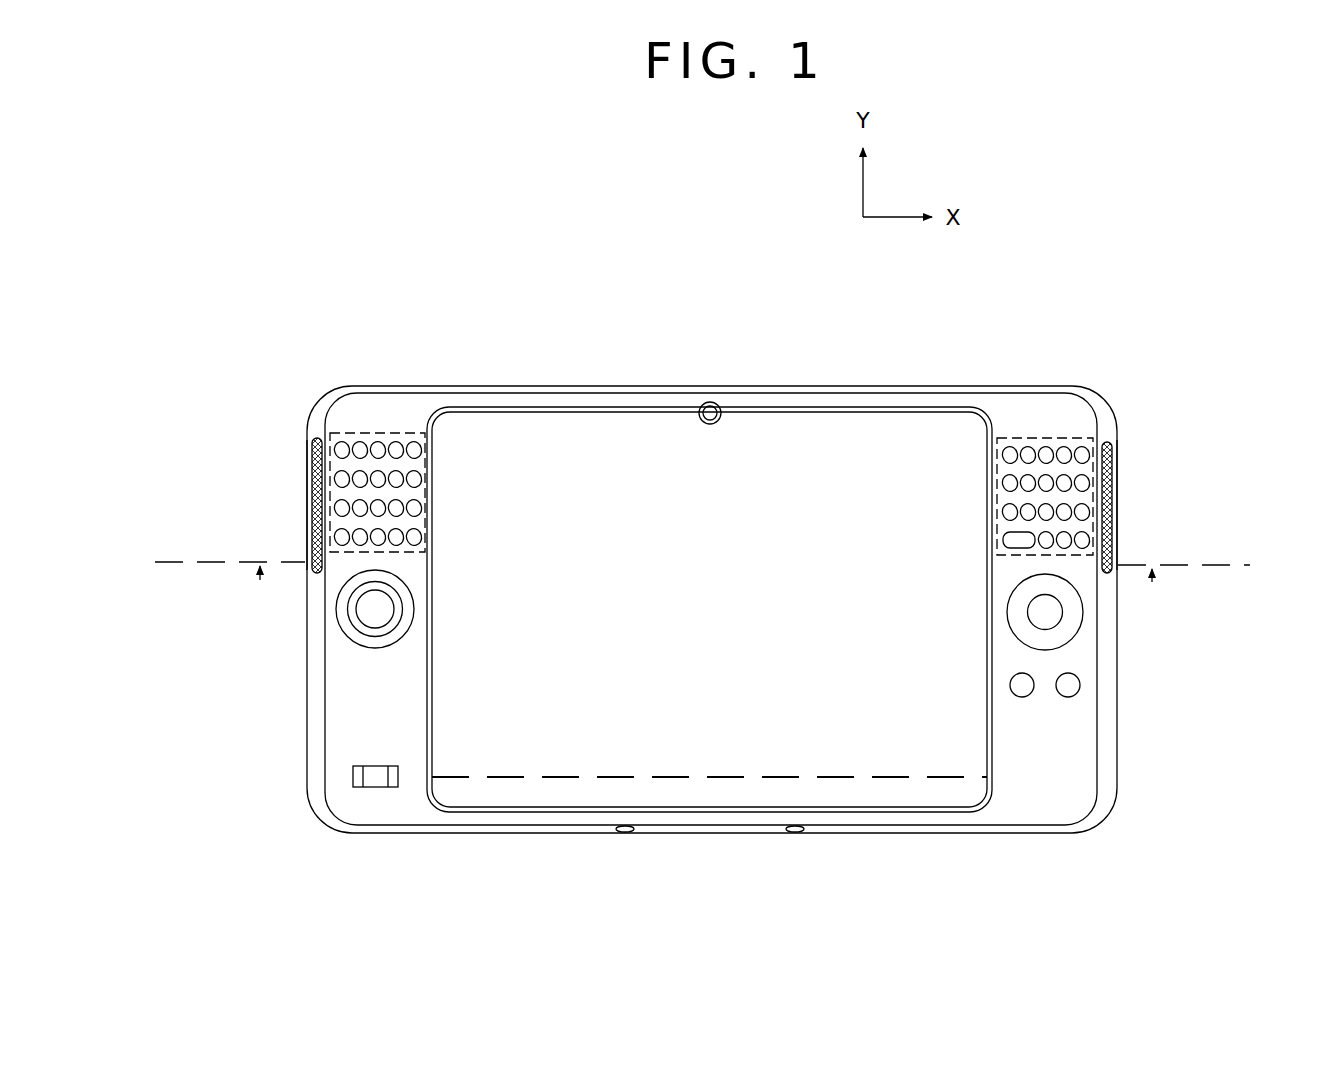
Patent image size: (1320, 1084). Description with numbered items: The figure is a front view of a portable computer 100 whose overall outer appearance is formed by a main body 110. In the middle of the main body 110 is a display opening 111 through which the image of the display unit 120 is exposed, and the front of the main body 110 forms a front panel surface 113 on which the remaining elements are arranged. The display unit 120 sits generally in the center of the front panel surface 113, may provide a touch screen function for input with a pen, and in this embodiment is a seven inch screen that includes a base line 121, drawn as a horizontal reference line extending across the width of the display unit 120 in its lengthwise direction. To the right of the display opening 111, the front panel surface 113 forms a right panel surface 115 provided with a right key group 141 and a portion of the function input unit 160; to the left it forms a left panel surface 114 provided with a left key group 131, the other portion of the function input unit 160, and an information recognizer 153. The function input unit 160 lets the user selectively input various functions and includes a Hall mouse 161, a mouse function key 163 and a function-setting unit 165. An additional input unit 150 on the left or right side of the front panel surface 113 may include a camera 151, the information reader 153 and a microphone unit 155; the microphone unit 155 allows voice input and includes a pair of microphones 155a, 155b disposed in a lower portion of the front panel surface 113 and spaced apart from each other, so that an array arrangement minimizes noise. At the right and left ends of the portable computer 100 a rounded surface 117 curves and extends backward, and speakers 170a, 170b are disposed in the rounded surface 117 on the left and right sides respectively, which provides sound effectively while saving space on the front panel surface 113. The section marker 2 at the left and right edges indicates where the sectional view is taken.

The portable computer 100 is at (455, 200).
The main body 110 is at (415, 302).
The display opening 111 is at (800, 798).
The front panel surface 113 is at (905, 402).
The left panel surface 114 is at (410, 420).
The right panel surface 115 is at (1003, 420).
The rounded surface 117 is at (310, 426).
The display unit 120 is at (870, 790).
The base line 121 is at (896, 774).
The left key group 131 is at (367, 425).
The right key group 141 is at (1054, 427).
The additional input unit 150 is at (705, 918).
The camera 151 is at (712, 424).
The information reader 153 is at (383, 790).
The microphone unit 155 is at (770, 850).
The microphone 155a is at (622, 832).
The microphone 155b is at (795, 832).
The function input unit 160 is at (1213, 667).
The Hall mouse 161 is at (418, 617).
The mouse function key 163 is at (1028, 672).
The function-setting unit 165 is at (1083, 607).
The speaker 170a is at (311, 500).
The speaker 170b is at (1114, 494).
The section line 2 is at (702, 588).